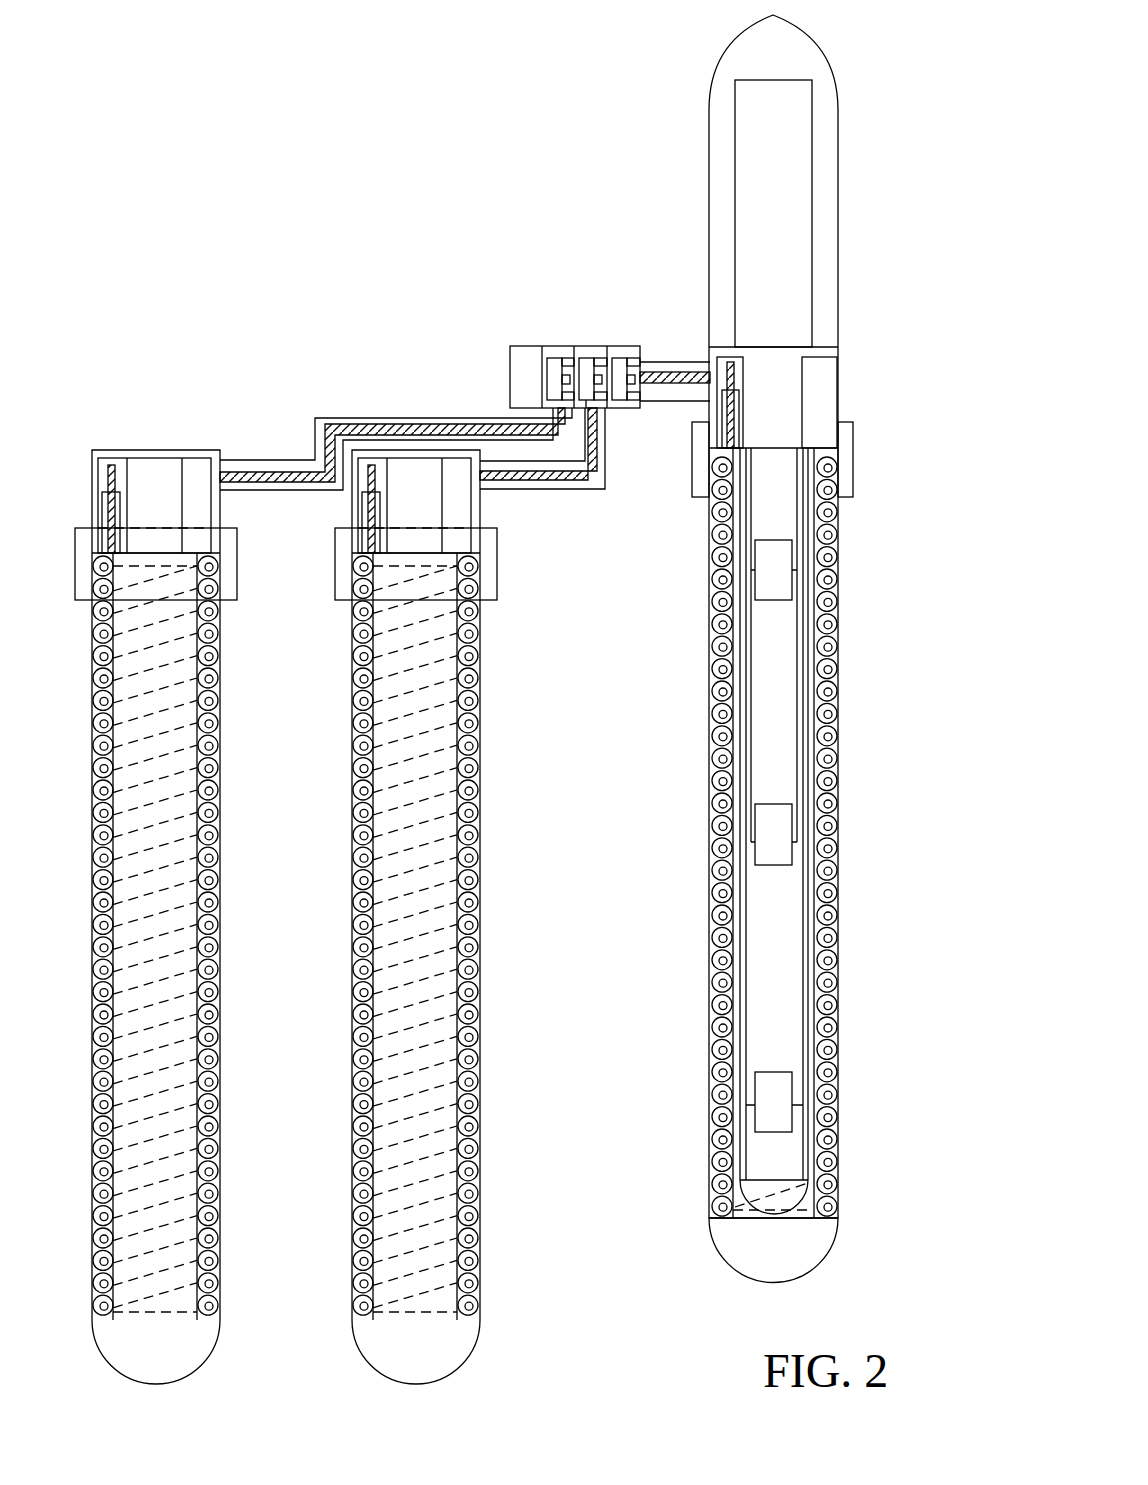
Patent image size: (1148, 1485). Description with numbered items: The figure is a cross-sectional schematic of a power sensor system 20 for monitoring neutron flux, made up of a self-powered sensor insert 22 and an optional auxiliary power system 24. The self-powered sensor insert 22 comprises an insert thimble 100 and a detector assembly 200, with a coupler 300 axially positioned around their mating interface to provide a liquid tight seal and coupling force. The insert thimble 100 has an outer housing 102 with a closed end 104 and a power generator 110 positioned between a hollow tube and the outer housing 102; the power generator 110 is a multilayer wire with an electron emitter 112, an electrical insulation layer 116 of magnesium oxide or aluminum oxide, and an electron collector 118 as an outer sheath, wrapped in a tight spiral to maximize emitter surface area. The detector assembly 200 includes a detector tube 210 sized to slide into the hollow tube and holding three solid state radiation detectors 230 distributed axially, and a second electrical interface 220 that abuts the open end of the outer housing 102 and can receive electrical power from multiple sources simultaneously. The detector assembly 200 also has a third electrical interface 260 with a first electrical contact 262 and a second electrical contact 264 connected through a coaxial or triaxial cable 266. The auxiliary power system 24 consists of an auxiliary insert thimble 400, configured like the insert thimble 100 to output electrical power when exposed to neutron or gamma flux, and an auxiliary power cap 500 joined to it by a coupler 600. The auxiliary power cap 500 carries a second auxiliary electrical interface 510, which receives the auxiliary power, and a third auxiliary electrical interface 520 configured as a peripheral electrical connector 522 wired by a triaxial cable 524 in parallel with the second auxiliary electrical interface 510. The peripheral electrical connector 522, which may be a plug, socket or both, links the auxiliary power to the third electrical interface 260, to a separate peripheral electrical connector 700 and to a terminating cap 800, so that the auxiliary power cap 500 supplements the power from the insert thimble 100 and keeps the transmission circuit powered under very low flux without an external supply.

The power sensor system 20 is at (248, 259).
The self-powered sensor insert 22 is at (696, 237).
The auxiliary power system 24 is at (234, 742).
The insert thimble 100 is at (712, 765).
The outer housing 102 is at (840, 1190).
The closed end 104 is at (712, 1245).
The power generator 110 is at (840, 1115).
The electron emitter 112 is at (833, 958).
The electrical insulation layer 116 is at (838, 902).
The electron collector 118 is at (838, 983).
The detector assembly 200 is at (709, 117).
The detector tube 210 is at (808, 1225).
The second electrical interface 220 is at (840, 380).
The solid state radiation detector 230 is at (793, 580).
The third electrical interface 260 is at (614, 410).
The first electrical contact 262 is at (645, 362).
The second electrical contact 264 is at (645, 375).
The cable 266 is at (668, 402).
The coupler 300 is at (853, 470).
The auxiliary insert thimble 400 is at (222, 700).
The auxiliary power cap 500 is at (118, 452).
The second auxiliary electrical interface 510 is at (195, 470).
The third auxiliary electrical interface 520 is at (565, 346).
The peripheral electrical connector 522 is at (543, 378).
The triaxial cable 524 is at (335, 420).
The coupler 600 is at (238, 580).
The separate peripheral electrical connector 700 is at (591, 346).
The terminating cap 800 is at (528, 346).